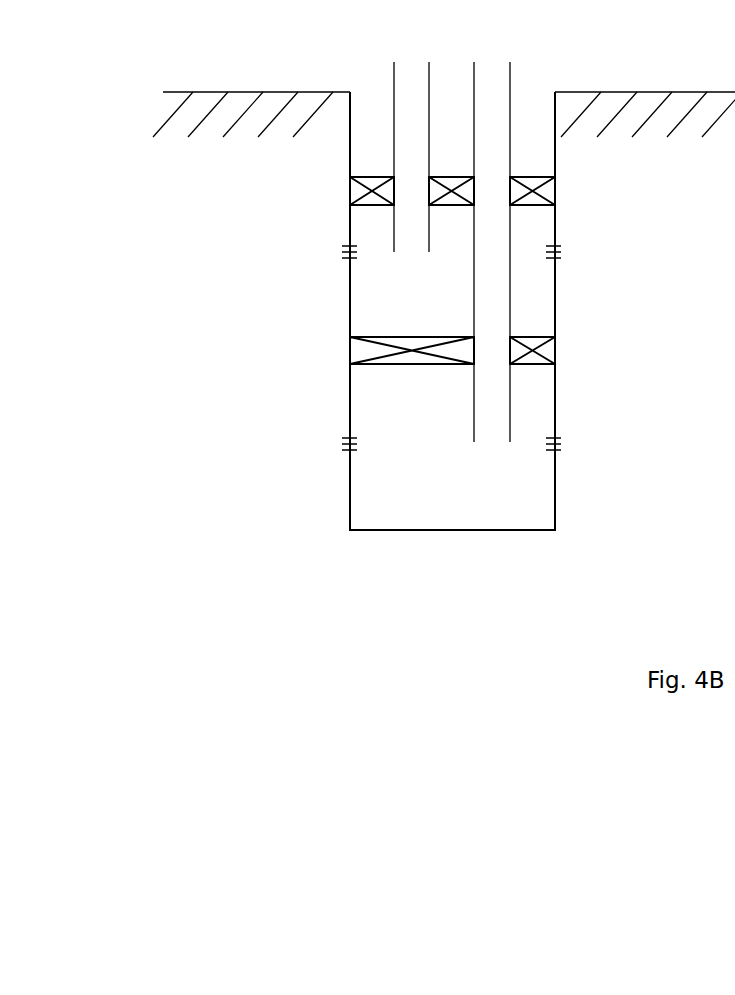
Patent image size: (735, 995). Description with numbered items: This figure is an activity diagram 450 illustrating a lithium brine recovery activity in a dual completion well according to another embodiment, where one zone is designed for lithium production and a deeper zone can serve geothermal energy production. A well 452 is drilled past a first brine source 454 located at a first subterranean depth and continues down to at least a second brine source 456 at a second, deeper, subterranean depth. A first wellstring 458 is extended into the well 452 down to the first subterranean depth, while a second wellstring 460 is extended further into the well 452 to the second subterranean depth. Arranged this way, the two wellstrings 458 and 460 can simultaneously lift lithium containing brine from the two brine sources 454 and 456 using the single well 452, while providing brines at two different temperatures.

The activity diagram 450 is at (210, 598).
The well 452 is at (348, 485).
The first brine source 454 is at (337, 252).
The second brine source 456 is at (340, 443).
The first wellstring 458 is at (393, 92).
The second wellstring 460 is at (510, 92).